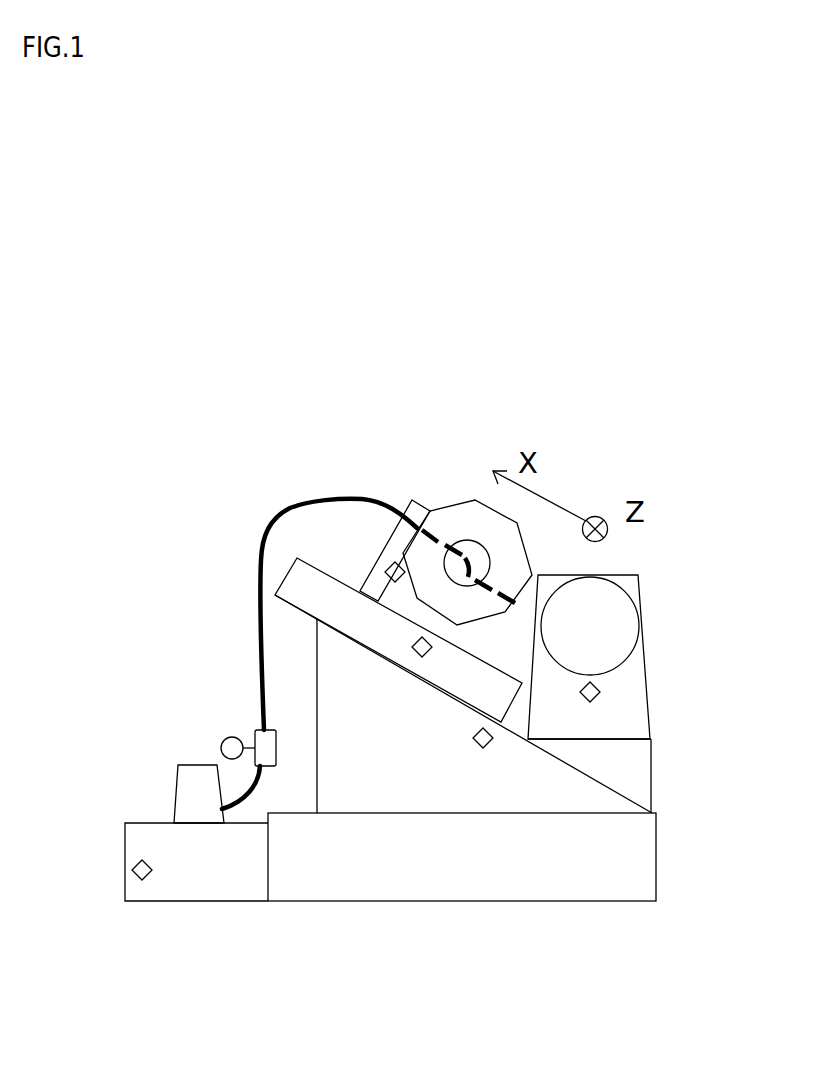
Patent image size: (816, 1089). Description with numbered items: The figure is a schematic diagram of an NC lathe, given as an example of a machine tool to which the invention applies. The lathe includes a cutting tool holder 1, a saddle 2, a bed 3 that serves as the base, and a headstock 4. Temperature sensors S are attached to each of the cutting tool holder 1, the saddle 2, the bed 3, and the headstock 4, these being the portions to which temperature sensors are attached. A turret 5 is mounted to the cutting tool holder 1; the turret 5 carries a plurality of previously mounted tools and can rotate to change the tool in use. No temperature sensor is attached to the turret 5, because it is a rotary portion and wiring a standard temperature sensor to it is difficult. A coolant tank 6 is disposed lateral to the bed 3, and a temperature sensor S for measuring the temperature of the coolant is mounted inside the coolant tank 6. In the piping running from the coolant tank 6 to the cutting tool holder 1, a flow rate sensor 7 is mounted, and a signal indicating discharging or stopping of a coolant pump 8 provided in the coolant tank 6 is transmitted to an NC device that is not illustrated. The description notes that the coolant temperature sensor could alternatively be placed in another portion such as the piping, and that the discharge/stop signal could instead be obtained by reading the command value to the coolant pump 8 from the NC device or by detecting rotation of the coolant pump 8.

The cutting tool holder 1 is at (400, 538).
The saddle 2 is at (312, 595).
The bed 3 is at (573, 807).
The headstock 4 is at (623, 707).
The turret 5 is at (460, 520).
The coolant tank 6 is at (150, 837).
The flow rate sensor 7 is at (256, 735).
The coolant pump 8 is at (195, 777).
The temperature sensor S is at (388, 571).